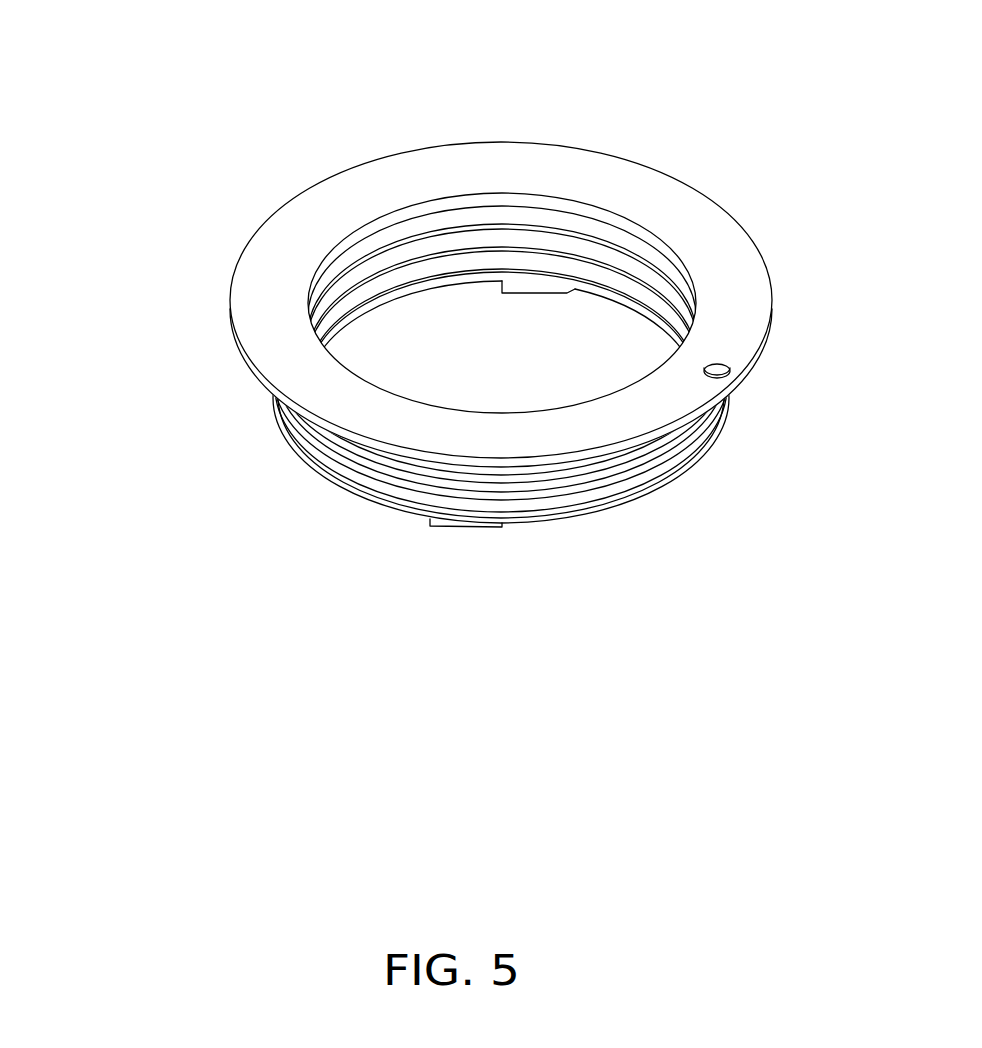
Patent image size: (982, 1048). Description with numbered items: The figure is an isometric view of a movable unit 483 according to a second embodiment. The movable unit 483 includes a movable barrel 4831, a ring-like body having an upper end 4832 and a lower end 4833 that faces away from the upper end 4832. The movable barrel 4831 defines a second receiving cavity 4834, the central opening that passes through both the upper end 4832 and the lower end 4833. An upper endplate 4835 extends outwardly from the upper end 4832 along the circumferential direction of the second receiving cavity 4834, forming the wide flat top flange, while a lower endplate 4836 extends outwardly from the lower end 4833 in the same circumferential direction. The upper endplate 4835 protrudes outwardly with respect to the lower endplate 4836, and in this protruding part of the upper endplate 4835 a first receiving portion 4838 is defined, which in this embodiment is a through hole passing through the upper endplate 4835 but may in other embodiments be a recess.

The movable unit 483 is at (497, 45).
The movable barrel 4831 is at (136, 166).
The upper end 4832 is at (343, 268).
The lower end 4833 is at (365, 468).
The second receiving cavity 4834 is at (430, 320).
The upper endplate 4835 is at (278, 302).
The lower endplate 4836 is at (307, 435).
The first receiving portion 4838 is at (723, 367).